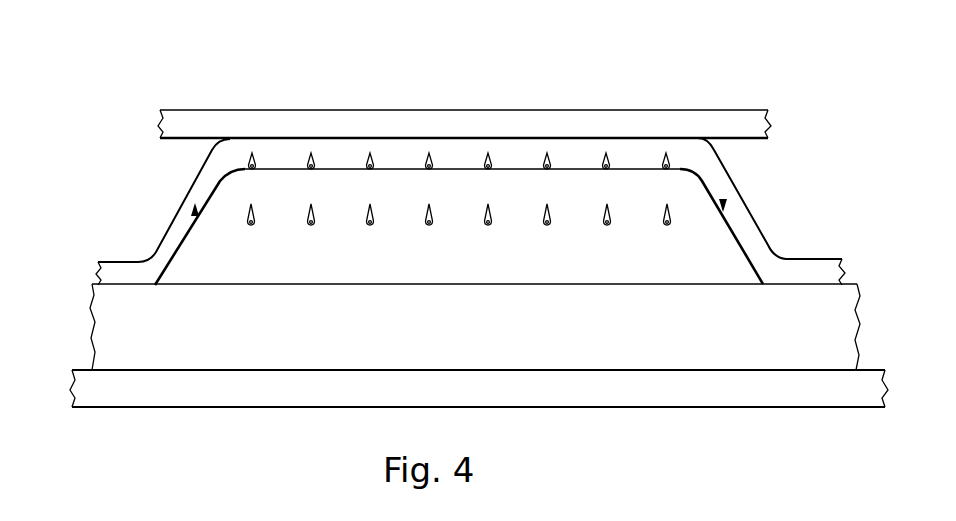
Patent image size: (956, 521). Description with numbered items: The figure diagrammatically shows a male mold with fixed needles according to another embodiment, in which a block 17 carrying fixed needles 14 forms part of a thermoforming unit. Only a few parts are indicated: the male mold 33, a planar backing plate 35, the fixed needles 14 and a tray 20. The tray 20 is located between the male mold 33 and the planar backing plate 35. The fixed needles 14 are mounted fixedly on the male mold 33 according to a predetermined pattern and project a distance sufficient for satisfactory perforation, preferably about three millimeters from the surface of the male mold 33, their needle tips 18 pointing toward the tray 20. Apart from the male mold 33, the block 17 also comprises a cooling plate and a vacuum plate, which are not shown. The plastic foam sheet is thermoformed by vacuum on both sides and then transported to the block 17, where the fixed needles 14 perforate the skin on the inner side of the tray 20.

The fixed needles 14 is at (608, 221).
The block 17 is at (157, 214).
The needle tips 18 is at (369, 156).
The tray 20 is at (733, 188).
The male mold 33 is at (437, 182).
The planar backing plate 35 is at (234, 120).